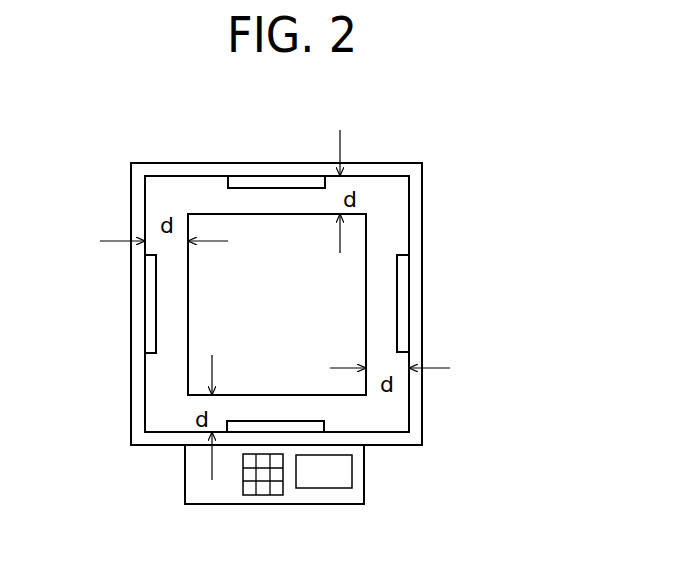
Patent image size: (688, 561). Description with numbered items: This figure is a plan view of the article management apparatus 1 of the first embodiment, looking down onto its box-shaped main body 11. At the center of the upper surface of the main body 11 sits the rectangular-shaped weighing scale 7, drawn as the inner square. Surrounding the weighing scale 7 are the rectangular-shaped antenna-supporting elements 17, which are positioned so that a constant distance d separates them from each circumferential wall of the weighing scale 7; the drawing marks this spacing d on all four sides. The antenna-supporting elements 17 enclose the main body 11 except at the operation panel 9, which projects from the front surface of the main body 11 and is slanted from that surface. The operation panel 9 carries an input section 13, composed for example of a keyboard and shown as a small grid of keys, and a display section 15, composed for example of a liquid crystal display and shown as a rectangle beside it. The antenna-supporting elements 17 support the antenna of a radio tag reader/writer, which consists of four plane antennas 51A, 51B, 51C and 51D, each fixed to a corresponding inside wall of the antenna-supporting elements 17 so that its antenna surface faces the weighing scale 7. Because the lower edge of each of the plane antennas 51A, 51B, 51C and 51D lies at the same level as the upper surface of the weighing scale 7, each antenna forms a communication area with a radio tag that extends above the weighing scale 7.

The article management apparatus 1 is at (167, 366).
The weighing scale 7 is at (253, 232).
The operation panel 9 is at (196, 478).
The main body 11 is at (367, 232).
The input section 13 is at (264, 495).
The display section 15 is at (326, 488).
The antenna-supporting elements 17 is at (423, 188).
The plane antenna 51A is at (312, 420).
The plane antenna 51B is at (390, 308).
The plane antenna 51C is at (290, 180).
The plane antenna 51D is at (158, 290).